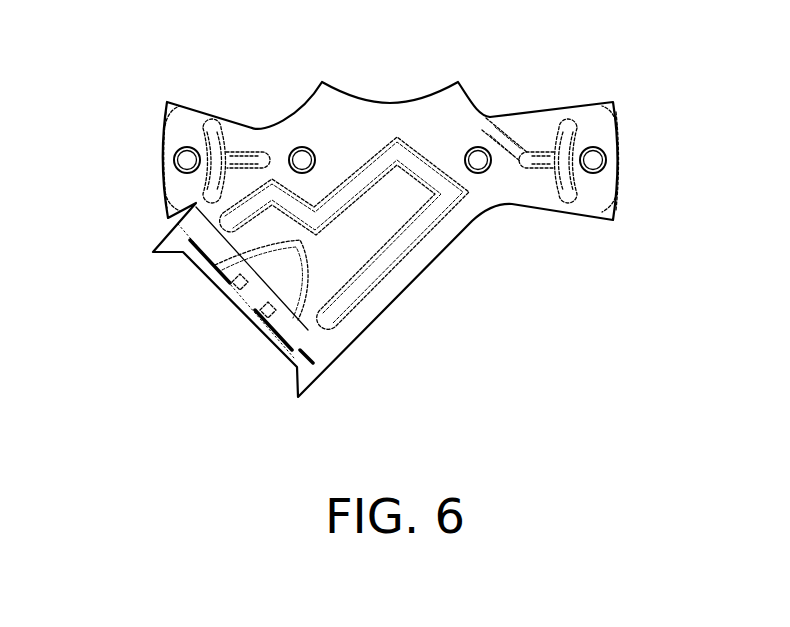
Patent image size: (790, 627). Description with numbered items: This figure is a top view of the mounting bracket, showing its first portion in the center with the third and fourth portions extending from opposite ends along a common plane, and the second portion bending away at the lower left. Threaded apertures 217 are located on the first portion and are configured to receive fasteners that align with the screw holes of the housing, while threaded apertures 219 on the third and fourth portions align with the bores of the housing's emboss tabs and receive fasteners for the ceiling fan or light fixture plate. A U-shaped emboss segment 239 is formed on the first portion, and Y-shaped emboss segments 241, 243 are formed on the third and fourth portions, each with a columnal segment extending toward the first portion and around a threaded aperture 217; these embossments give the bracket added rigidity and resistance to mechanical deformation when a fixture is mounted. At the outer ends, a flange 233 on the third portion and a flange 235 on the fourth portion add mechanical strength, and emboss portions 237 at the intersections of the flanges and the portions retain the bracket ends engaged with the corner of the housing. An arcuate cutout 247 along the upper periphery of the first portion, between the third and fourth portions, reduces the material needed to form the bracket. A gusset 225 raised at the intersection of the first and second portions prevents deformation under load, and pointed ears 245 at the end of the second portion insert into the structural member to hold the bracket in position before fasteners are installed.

The threaded aperture 217 is at (302, 147).
The threaded aperture 219 is at (187, 147).
The gusset 225 is at (266, 276).
The flange 233 is at (622, 158).
The flange 235 is at (158, 170).
The emboss portion 237 is at (160, 118).
The emboss segment 239 is at (389, 264).
The emboss segment 241 is at (570, 122).
The emboss segment 243 is at (212, 122).
The pointed ear 245 is at (178, 250).
The arcuate cutout 247 is at (393, 101).